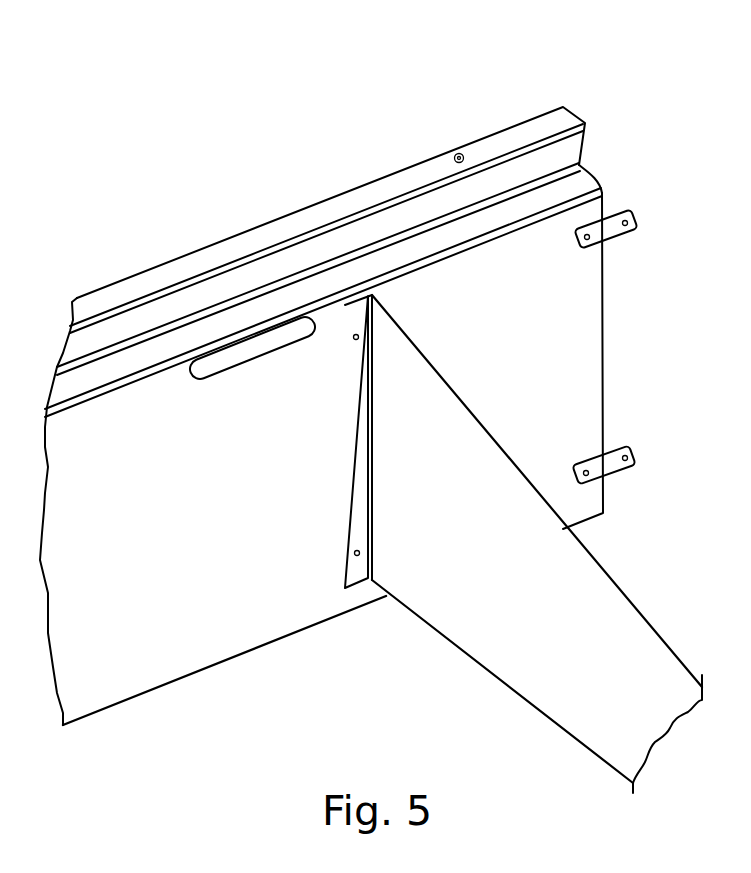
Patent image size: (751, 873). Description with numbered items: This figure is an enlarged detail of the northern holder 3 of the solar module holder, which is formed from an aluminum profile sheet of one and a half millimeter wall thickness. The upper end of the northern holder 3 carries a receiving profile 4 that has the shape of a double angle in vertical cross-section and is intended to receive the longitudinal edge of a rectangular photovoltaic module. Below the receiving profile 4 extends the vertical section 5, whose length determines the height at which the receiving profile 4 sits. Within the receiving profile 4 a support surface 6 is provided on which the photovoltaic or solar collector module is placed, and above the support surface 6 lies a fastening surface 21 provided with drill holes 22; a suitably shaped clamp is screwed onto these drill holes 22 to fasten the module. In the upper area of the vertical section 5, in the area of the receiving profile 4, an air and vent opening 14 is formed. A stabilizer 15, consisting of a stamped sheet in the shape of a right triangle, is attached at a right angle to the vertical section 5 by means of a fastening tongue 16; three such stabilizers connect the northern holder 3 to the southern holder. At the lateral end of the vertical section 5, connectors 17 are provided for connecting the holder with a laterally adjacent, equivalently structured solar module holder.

The northern holder 3 is at (659, 333).
The receiving profile 4 is at (585, 102).
The vertical section 5 is at (165, 535).
The support surface 6 is at (582, 192).
The air and vent openings 14 is at (237, 357).
The stabilizer 15 is at (474, 554).
The fastening tongue 16 is at (355, 443).
The connector 17 is at (633, 228).
The fastening surface 21 is at (548, 125).
The drill holes 22 is at (457, 153).